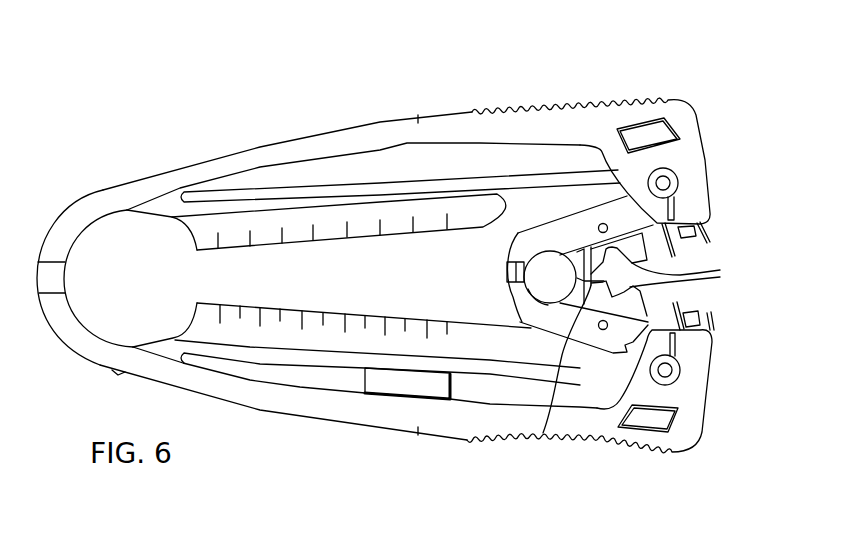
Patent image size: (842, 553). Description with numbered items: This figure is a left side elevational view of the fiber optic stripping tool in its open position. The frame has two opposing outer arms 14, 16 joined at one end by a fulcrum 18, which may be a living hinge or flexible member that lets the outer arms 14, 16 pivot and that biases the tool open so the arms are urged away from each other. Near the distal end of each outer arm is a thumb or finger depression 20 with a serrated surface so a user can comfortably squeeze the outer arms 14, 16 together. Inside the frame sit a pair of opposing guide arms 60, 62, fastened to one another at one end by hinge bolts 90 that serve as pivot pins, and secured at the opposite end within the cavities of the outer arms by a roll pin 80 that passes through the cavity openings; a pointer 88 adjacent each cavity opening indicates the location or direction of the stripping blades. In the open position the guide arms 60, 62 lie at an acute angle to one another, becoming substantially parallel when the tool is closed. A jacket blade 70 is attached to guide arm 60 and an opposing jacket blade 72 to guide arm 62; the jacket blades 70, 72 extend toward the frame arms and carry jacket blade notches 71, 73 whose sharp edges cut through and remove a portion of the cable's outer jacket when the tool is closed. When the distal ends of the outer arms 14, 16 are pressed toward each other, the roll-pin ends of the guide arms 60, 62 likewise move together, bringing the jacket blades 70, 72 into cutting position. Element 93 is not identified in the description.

The outer arm 14 is at (348, 418).
The outer arm 16 is at (280, 142).
The fulcrum 18 is at (43, 280).
The thumb or finger depression 20 is at (573, 117).
The guide arm 60 is at (550, 318).
The guide arm 62 is at (593, 217).
The jacket blade 70 is at (638, 293).
The jacket blade notch 71 is at (547, 433).
The jacket blade 72 is at (644, 250).
The jacket blade notch 73 is at (720, 277).
The roll pin 80 is at (670, 182).
The pointer 88 is at (675, 208).
The hinge bolt 90 is at (547, 290).
The tab 93 is at (507, 279).